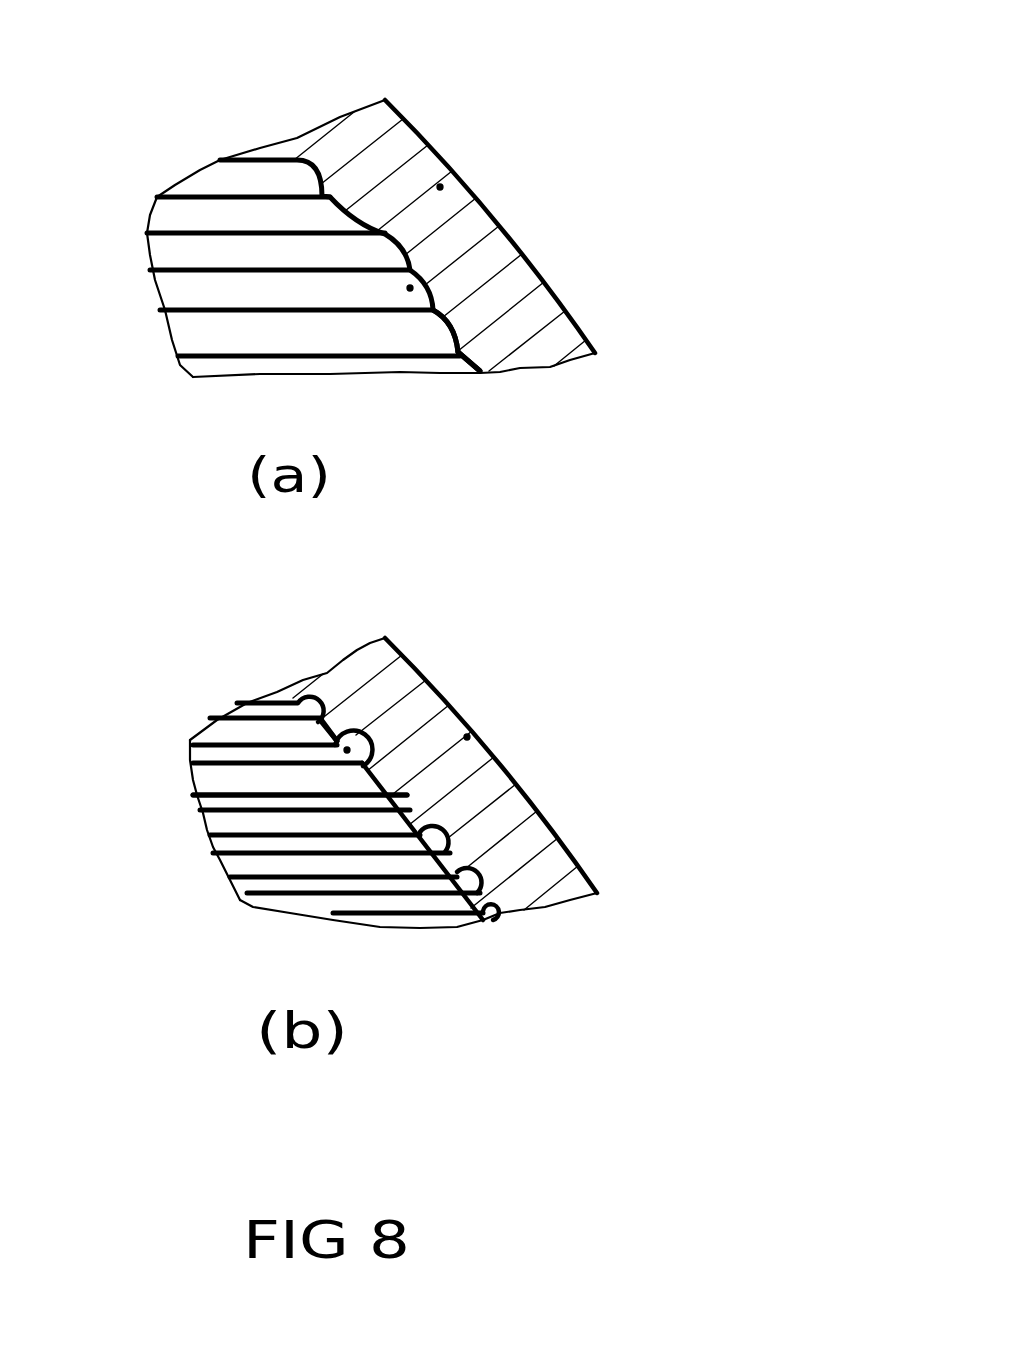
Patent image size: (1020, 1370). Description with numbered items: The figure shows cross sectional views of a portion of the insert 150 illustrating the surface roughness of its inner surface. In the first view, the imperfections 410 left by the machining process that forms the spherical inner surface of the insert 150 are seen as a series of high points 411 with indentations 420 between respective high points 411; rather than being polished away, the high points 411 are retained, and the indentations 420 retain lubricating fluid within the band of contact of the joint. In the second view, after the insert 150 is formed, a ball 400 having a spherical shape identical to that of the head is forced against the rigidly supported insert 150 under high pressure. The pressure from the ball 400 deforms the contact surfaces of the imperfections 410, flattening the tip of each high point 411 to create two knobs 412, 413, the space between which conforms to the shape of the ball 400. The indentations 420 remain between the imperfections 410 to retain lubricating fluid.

In FIG. 8a, the insert 150 is at (440, 187).
In FIG. 8b, the insert 150 is at (467, 737).
In FIG. 8a, the imperfections 410 is at (457, 347).
In FIG. 8b, the imperfections 410 is at (325, 722).
In FIG. 8a, the high points 411 is at (452, 347).
In FIG. 8a, the indentations 420 is at (410, 288).
In FIG. 8b, the indentations 420 is at (375, 775).
In FIG. 8b, the knob 412 is at (303, 697).
In FIG. 8b, the knob 413 is at (347, 750).
In FIG. 8b, the ball 400 is at (520, 993).